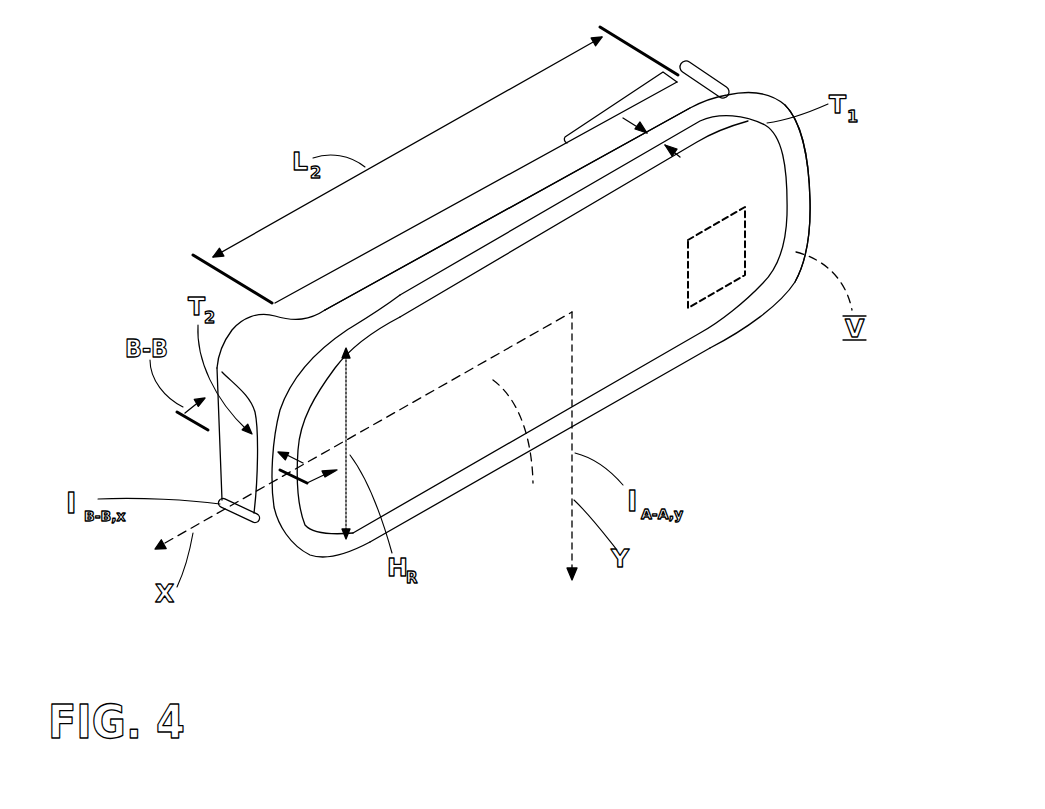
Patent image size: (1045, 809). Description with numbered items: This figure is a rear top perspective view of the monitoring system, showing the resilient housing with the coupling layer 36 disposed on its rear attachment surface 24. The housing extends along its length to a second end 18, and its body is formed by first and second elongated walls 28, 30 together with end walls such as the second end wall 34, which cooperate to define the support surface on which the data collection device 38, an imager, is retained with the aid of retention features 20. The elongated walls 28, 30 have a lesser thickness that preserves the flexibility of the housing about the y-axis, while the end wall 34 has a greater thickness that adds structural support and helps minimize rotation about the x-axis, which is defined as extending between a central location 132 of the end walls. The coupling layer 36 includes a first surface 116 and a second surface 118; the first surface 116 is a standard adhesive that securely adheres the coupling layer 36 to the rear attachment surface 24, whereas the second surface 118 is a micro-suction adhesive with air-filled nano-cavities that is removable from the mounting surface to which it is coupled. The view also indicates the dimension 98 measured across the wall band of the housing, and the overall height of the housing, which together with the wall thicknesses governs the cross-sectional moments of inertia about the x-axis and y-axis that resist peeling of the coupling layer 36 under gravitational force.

The second end 18 is at (268, 528).
The retention features 20 is at (245, 335).
The rear attachment surface 24 is at (798, 180).
The first elongated wall 28 is at (508, 220).
The second elongated wall 30 is at (617, 398).
The second end wall 34 is at (241, 514).
The coupling layer 36 is at (623, 338).
The data collection device 38 is at (427, 255).
The lip width 98 is at (625, 100).
The first surface 116 is at (520, 449).
The second surface 118 is at (407, 447).
The central location 132 is at (242, 473).